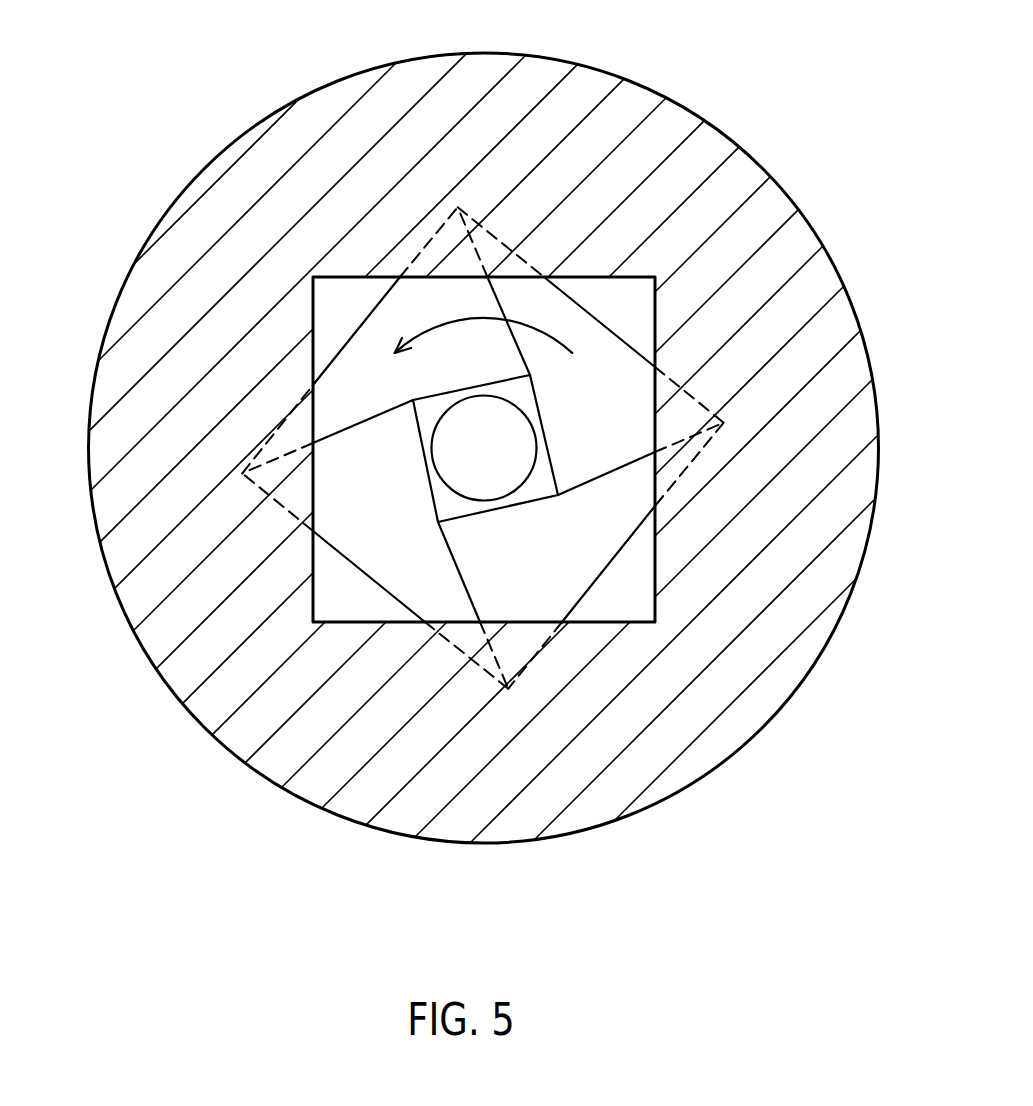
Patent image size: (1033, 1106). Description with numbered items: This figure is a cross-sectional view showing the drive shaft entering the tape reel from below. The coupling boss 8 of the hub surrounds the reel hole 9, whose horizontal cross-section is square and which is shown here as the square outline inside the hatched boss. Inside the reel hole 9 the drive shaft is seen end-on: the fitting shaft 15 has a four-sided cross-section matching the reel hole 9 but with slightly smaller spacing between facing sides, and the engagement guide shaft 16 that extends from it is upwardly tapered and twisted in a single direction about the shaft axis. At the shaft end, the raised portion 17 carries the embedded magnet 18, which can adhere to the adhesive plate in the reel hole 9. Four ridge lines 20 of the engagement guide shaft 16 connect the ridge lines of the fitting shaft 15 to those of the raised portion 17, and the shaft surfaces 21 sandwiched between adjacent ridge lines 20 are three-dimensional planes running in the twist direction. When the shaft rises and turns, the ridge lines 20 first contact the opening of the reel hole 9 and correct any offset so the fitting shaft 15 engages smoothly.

The coupling boss 8 is at (592, 82).
The reel hole 9 is at (617, 278).
The fitting shaft 15 is at (307, 582).
The engagement guide shaft 16 is at (388, 552).
The raised portion 17 is at (527, 393).
The magnet 18 is at (512, 438).
The ridge lines 20 is at (387, 411).
The shaft surfaces 21 is at (347, 471).